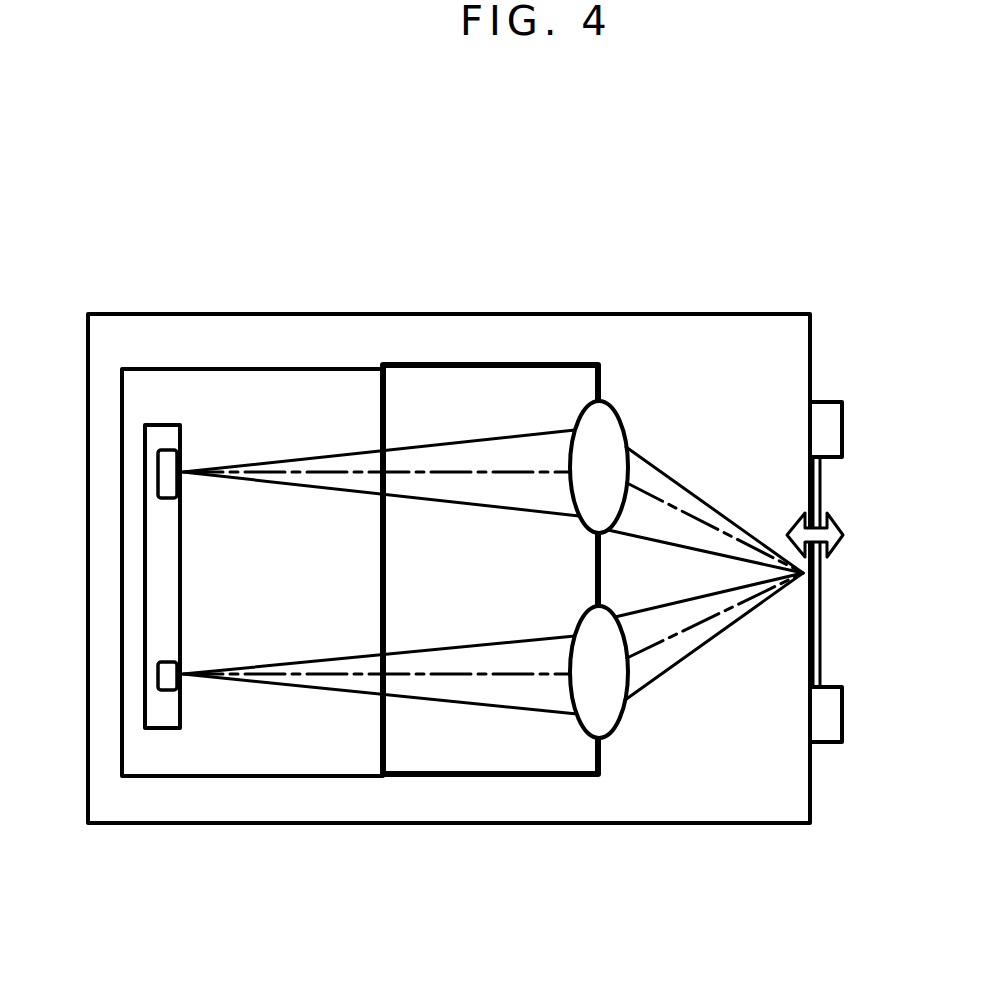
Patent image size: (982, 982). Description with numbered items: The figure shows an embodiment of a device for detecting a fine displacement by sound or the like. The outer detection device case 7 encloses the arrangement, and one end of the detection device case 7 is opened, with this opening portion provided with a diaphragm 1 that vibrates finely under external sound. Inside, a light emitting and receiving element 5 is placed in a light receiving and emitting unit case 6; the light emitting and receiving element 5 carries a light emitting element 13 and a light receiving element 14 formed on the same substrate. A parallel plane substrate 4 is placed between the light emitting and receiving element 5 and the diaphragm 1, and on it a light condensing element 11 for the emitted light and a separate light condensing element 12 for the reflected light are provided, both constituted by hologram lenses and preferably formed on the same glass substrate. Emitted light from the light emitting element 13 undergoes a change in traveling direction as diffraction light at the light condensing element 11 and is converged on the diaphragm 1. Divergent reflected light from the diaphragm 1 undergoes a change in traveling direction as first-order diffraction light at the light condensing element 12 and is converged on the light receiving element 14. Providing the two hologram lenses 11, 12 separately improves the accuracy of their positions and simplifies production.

The diaphragm 1 is at (825, 493).
The parallel plane substrate 4 is at (475, 775).
The light emitting and receiving element 5 is at (158, 567).
The light receiving and emitting unit case 6 is at (183, 777).
The detection device case 7 is at (333, 823).
The light condensing element 11 is at (620, 423).
The light condensing element 12 is at (622, 717).
The light emitting element 13 is at (183, 462).
The light receiving element 14 is at (183, 665).